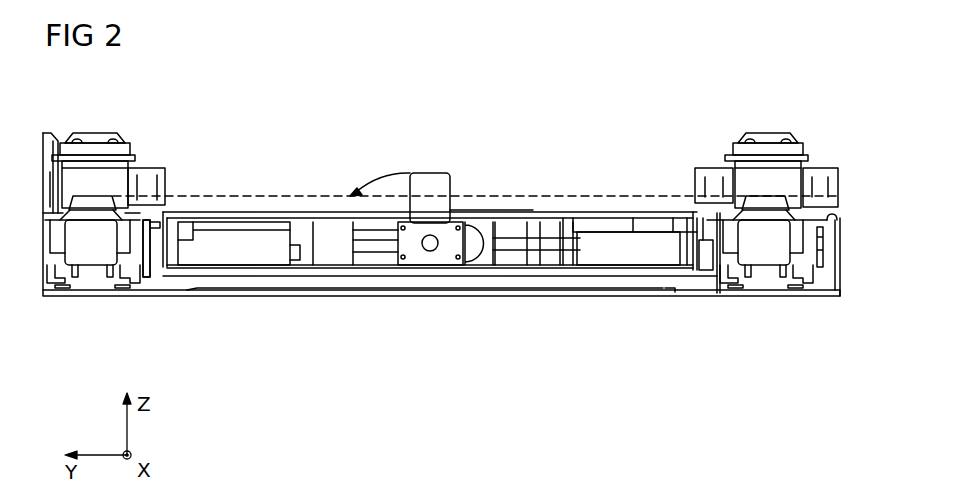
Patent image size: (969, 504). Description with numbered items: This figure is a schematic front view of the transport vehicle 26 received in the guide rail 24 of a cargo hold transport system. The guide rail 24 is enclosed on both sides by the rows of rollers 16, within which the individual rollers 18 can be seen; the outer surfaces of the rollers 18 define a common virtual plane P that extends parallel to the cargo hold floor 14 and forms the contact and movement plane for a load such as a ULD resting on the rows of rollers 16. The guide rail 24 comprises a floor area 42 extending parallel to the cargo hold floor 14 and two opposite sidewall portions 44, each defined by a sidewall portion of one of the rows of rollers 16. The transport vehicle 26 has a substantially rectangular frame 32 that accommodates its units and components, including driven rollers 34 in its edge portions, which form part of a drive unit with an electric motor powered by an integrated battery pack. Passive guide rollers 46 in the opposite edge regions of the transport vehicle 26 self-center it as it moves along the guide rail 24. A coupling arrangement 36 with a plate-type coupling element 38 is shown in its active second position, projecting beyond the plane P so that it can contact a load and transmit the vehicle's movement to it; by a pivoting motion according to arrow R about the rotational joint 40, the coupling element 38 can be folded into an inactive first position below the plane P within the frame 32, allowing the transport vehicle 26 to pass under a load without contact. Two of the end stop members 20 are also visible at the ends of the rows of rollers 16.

The cargo hold floor 14 is at (450, 247).
The rows of rollers 16 is at (75, 253).
The rollers 18 is at (97, 205).
The end stop members 20 is at (117, 183).
The guide rail 24 is at (155, 296).
The transport vehicle 26 is at (299, 191).
The frame 32 is at (550, 218).
The driven rollers 34 is at (245, 252).
The coupling arrangement 36 is at (474, 156).
The coupling element 38 is at (432, 185).
The rotational joint 40 is at (430, 248).
The floor area 42 is at (313, 280).
The sidewall portions 44 is at (125, 288).
The passive guide rollers 46 is at (155, 255).
The plane P is at (252, 195).
The arrow R is at (380, 173).